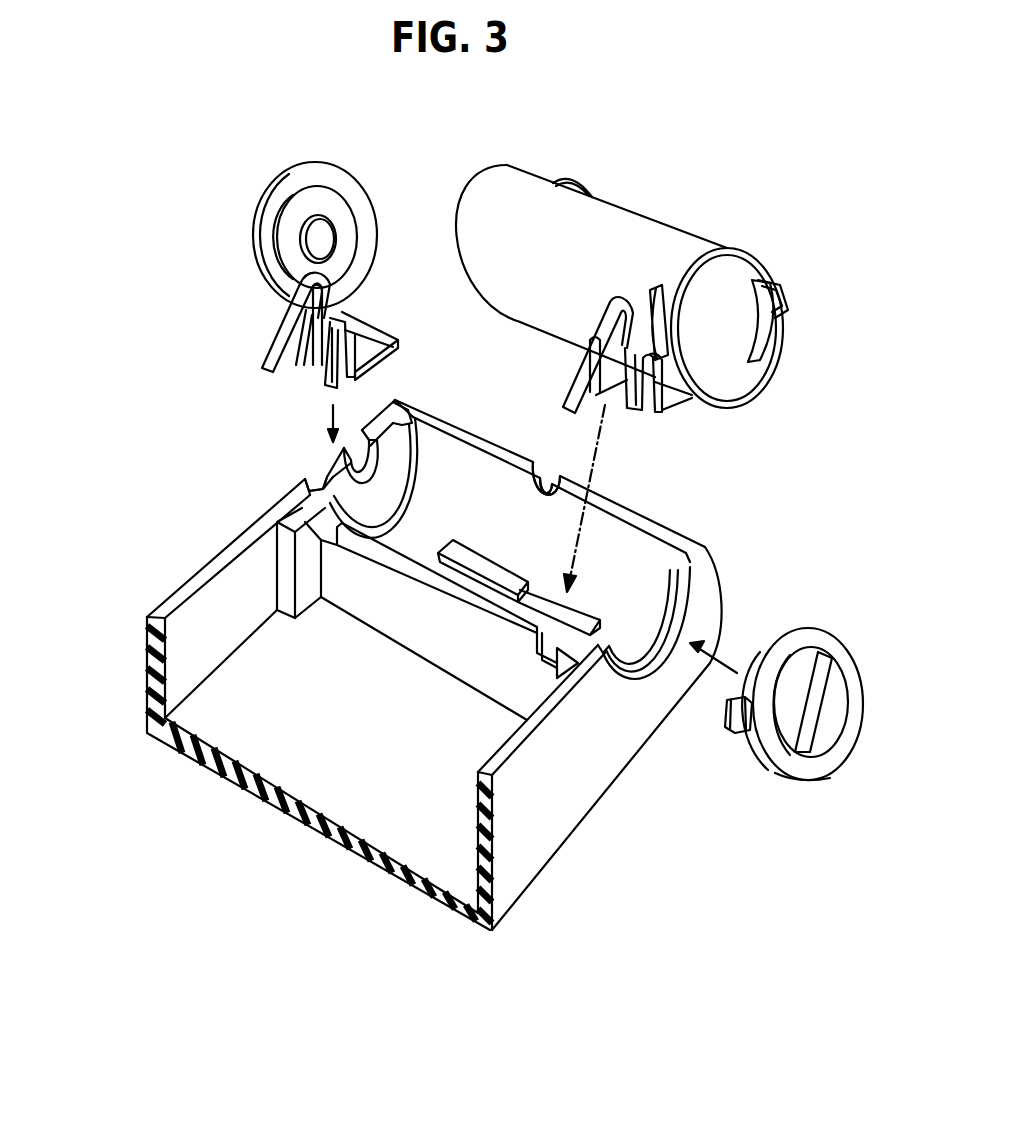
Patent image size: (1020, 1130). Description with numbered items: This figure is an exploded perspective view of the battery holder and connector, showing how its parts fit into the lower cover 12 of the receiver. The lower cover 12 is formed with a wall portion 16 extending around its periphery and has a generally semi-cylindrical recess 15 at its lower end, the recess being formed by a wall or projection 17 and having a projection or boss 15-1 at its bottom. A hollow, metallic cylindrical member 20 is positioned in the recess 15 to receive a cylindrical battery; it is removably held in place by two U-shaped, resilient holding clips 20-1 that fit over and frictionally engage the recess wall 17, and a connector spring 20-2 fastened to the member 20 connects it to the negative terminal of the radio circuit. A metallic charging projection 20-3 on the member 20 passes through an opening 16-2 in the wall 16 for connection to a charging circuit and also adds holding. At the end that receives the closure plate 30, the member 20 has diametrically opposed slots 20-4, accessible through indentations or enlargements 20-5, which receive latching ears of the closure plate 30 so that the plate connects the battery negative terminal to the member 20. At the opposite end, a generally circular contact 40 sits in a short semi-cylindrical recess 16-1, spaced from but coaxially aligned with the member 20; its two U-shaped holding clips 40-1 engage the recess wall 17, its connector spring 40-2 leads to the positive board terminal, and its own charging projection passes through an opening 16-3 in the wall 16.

The lower cover 12 is at (213, 520).
The semi-cylindrical recess 15 is at (640, 552).
The projection or boss 15-1 is at (465, 548).
The wall portion 16 is at (487, 441).
The short semi-cylindrical recess 16-1 is at (427, 386).
The opening 16-2 is at (545, 476).
The opening 16-3 is at (350, 468).
The recess wall 17 is at (400, 622).
The cylindrical member 20 is at (671, 206).
The holding clips 20-1 is at (640, 412).
The connector spring 20-2 is at (574, 373).
The charging projection 20-3 is at (575, 178).
The slots 20-4 is at (668, 306).
The indentations or enlargements 20-5 is at (776, 295).
The closure plate 30 is at (838, 626).
The circular contact 40 is at (342, 156).
The holding clips 40-1 is at (315, 380).
The connector spring 40-2 is at (272, 350).